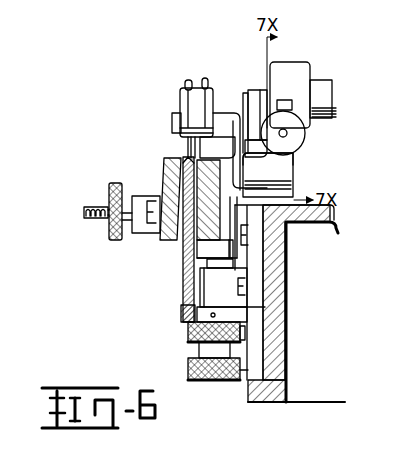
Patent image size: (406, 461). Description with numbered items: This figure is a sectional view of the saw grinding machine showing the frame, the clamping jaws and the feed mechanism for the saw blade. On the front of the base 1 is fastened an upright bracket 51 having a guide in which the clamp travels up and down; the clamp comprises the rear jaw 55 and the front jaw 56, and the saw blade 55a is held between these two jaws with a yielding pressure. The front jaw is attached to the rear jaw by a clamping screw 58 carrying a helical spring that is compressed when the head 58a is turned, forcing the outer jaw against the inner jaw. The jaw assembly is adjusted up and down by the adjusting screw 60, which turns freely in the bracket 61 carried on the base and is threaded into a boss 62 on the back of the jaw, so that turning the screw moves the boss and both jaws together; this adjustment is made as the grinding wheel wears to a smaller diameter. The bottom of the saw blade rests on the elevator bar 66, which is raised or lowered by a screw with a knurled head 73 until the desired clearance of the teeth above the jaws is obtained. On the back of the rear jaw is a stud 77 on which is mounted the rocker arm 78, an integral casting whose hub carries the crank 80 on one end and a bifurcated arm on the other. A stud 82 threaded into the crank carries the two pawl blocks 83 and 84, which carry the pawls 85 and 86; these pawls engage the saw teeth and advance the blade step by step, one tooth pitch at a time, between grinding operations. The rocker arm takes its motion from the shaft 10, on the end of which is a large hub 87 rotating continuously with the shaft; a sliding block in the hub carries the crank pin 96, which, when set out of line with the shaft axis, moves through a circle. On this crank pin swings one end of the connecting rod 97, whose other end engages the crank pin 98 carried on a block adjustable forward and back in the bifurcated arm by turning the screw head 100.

The base 1 is at (286, 366).
The shaft 10 is at (333, 97).
The upright bracket 51 is at (265, 260).
The rear jaw 55 is at (222, 207).
The saw blade 55a is at (165, 179).
The front jaw 56 is at (166, 168).
The clamping screw 58 is at (84, 213).
The screw head 58a is at (108, 237).
The adjusting screw 60 is at (188, 335).
The bracket 61 is at (214, 288).
The boss 62 is at (213, 253).
The elevator bar 66 is at (180, 309).
The knurled head 73 is at (206, 380).
The stud 77 is at (293, 179).
The rocker arm 78 is at (276, 167).
The crank 80 is at (233, 118).
The stud 82 is at (172, 117).
The pawl block 83 is at (181, 100).
The pawl block 84 is at (203, 85).
The pawl 85 is at (186, 148).
The pawl 86 is at (217, 147).
The hub 87 is at (299, 68).
The crank pin 96 is at (245, 105).
The connecting rod 97 is at (258, 112).
The crank pin 98 is at (256, 150).
The screw head 100 is at (302, 133).